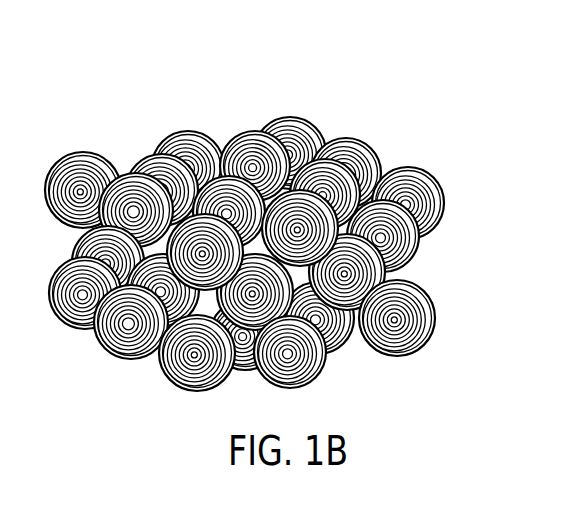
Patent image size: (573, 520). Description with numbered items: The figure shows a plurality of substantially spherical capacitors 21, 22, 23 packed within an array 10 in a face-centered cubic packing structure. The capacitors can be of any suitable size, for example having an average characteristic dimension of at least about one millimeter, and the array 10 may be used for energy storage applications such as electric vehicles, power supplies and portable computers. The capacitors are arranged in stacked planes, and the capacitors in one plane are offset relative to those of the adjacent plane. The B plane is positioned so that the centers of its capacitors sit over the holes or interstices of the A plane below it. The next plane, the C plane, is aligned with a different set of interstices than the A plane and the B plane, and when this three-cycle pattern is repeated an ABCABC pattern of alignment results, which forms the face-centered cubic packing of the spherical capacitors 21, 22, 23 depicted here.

The array 10 is at (272, 236).
The spherical capacitor 21 is at (418, 204).
The spherical capacitor 22 is at (410, 253).
The spherical capacitor 23 is at (320, 372).
The A plane A is at (212, 120).
The B plane B is at (307, 105).
The C plane C is at (368, 131).